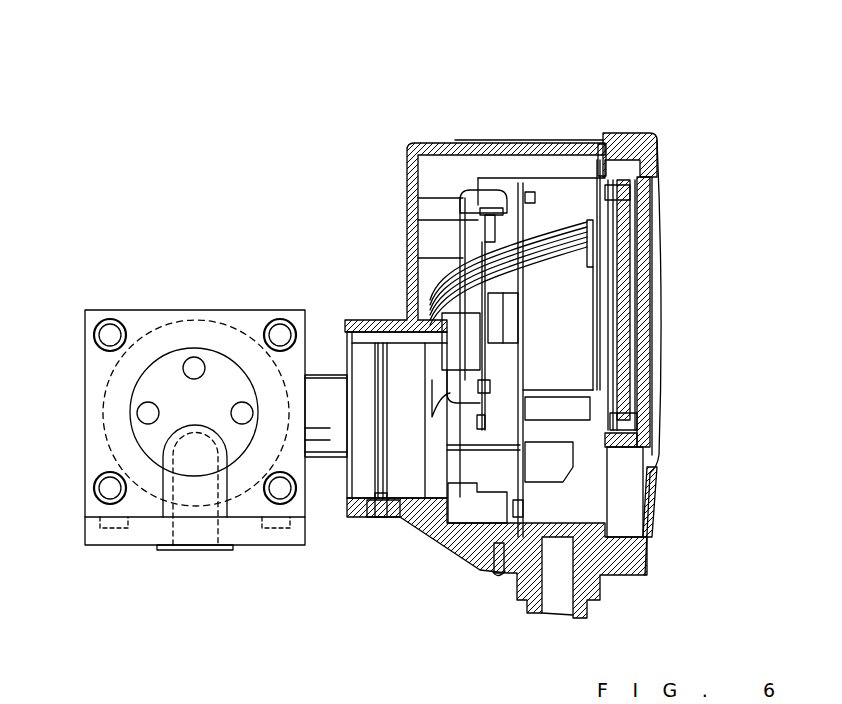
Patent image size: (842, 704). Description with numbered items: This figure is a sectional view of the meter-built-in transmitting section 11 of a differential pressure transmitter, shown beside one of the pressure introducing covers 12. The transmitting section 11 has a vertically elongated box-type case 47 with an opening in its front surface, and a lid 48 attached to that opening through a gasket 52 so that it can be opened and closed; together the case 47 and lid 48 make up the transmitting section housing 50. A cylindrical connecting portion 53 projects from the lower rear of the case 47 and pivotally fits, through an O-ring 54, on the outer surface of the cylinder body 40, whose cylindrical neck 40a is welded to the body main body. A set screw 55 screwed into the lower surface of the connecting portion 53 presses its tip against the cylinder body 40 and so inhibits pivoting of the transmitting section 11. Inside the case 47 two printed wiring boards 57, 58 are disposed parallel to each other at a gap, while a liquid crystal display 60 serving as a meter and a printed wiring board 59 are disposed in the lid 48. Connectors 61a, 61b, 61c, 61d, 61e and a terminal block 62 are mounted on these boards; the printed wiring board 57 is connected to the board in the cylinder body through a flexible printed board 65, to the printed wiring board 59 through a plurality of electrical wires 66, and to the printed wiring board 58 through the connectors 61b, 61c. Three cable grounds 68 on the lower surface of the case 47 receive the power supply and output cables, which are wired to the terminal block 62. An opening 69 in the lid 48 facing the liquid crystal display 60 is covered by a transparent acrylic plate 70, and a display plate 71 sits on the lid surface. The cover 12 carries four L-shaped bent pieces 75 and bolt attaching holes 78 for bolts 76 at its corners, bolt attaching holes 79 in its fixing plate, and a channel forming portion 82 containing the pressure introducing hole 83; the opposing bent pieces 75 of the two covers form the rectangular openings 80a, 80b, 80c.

The transmitting section 11 is at (100, 447).
The pressure introducing cover 12 is at (150, 300).
The cylinder body 40 is at (400, 348).
The cylindrical neck 40a is at (325, 375).
The case 47 is at (536, 141).
The lid 48 is at (611, 133).
The transmitting section housing 50 is at (603, 53).
The gasket 52 is at (623, 133).
The connecting portion 53 is at (360, 320).
The O-ring 54 is at (383, 518).
The set screw 55 is at (364, 518).
The printed wiring board 57 is at (532, 408).
The printed wiring board 58 is at (634, 452).
The printed wiring board 59 is at (639, 423).
The liquid crystal display 60 is at (633, 258).
The connector 61a is at (473, 350).
The connector 61b is at (497, 308).
The connector 61c is at (512, 325).
The connector 61d is at (587, 268).
The connector 61e is at (483, 228).
The terminal block 62 is at (494, 423).
The flexible printed board 65 is at (458, 242).
The electrical wires 66 is at (568, 222).
The cable ground 68 is at (602, 594).
The opening 69 is at (653, 286).
The transparent acrylic plate 70 is at (664, 272).
The display plate 71 is at (655, 378).
The L-shaped bent piece 75 is at (402, 698).
The bolt 76 is at (279, 320).
The bolt attaching hole 78 is at (268, 322).
The bolt attaching hole 79 is at (114, 530).
The opening 80a is at (313, 458).
The opening 80b is at (194, 318).
The opening 80c is at (100, 422).
The channel forming portion 82 is at (229, 488).
The pressure introducing hole 83 is at (175, 532).